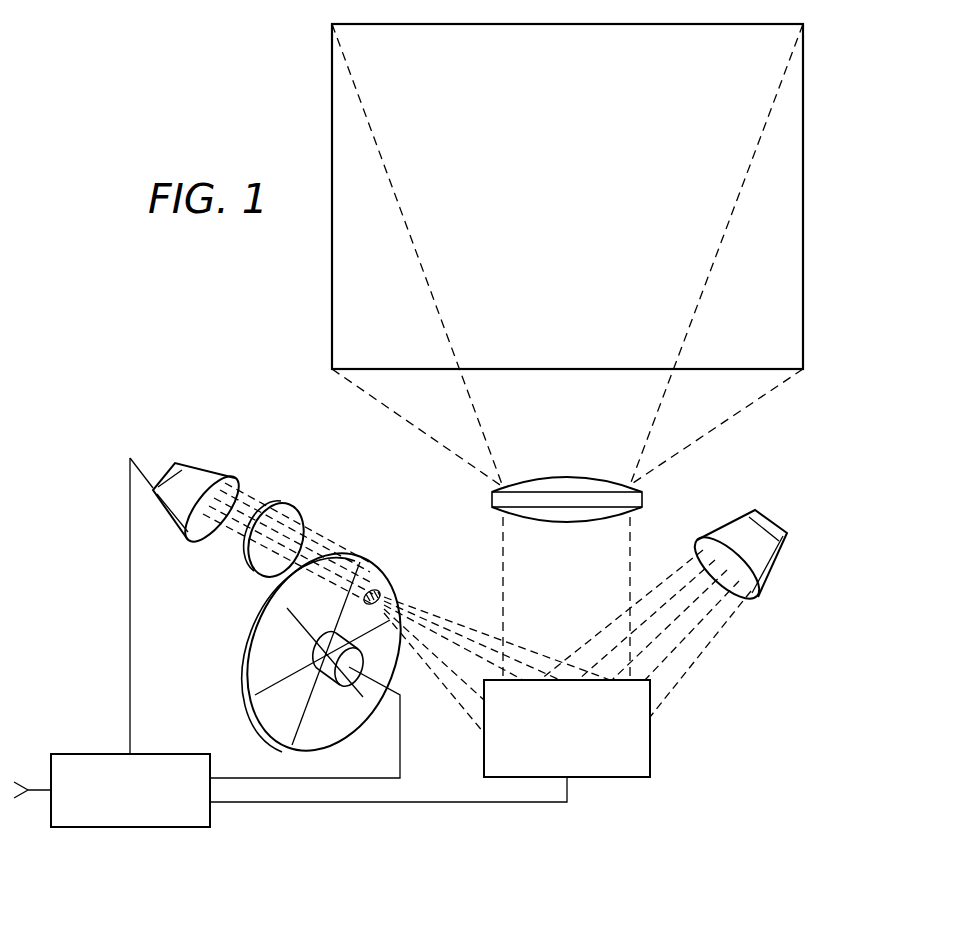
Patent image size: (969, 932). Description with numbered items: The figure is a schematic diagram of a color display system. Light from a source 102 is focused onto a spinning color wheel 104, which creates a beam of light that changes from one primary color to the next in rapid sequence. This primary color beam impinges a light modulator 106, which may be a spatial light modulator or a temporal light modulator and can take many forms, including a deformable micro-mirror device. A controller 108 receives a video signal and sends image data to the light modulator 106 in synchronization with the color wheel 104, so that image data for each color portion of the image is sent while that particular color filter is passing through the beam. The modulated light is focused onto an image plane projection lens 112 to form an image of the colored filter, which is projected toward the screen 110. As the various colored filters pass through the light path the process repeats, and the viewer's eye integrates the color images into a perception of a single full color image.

The source 102 is at (203, 466).
The spinning color wheel 104 is at (252, 645).
The light modulator 106 is at (652, 738).
The controller 108 is at (92, 754).
The display screen 110 is at (806, 193).
The image plane projection lens 112 is at (643, 497).